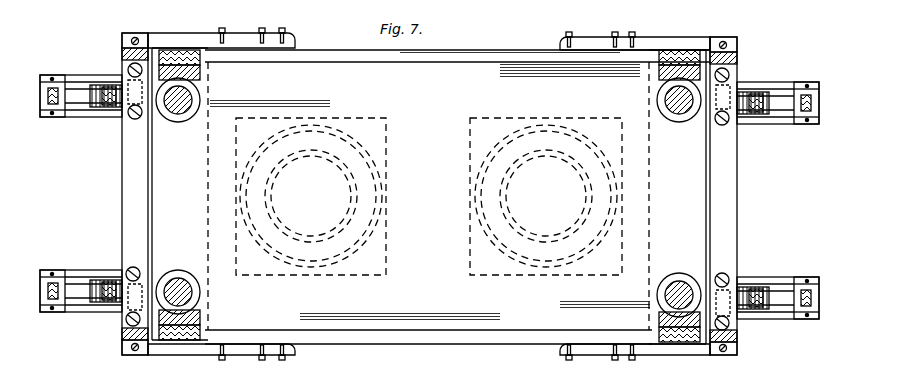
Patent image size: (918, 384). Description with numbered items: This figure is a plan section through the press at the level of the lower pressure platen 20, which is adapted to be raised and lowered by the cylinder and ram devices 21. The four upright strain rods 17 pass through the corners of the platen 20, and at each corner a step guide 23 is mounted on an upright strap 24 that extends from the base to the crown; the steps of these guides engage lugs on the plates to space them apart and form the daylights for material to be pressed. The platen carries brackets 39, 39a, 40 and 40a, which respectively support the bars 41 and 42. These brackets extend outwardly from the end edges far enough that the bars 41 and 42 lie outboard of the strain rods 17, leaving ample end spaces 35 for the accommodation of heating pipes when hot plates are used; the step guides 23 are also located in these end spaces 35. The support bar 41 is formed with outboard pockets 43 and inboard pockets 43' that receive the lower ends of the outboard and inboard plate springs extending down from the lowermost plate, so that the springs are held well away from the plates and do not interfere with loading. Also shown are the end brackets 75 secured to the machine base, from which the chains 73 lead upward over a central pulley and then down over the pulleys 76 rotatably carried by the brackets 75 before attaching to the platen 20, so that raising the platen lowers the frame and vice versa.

The upright strain rods 17 is at (180, 104).
The lower pressure platen 20 is at (362, 350).
The cylinder and ram devices 21 is at (470, 203).
The step guides 23 is at (172, 58).
The upright straps 24 is at (193, 55).
The end spaces 35 is at (429, 196).
The platen bracket 39 is at (592, 40).
The platen bracket 39a is at (590, 352).
The platen bracket 40 is at (242, 40).
The platen bracket 40a is at (240, 352).
The support bar 41 is at (740, 190).
The support bar 42 is at (126, 172).
The outboard pockets 43 is at (429, 194).
The inboard pockets 43' is at (429, 196).
The chains 73 is at (56, 96).
The end brackets 75 is at (70, 78).
The pulleys 76 is at (752, 86).